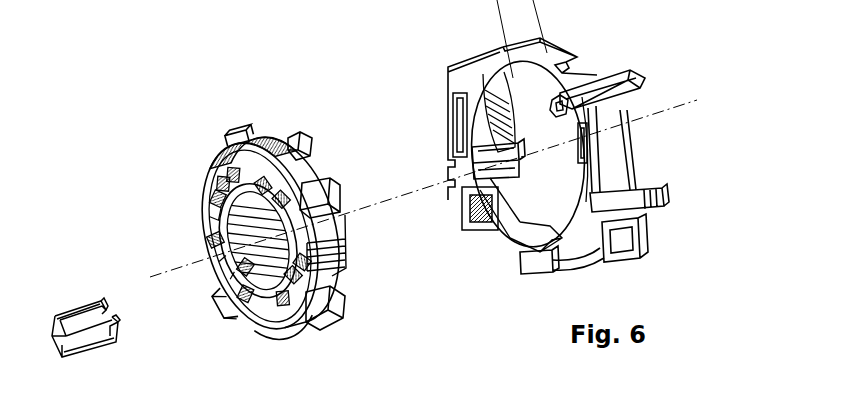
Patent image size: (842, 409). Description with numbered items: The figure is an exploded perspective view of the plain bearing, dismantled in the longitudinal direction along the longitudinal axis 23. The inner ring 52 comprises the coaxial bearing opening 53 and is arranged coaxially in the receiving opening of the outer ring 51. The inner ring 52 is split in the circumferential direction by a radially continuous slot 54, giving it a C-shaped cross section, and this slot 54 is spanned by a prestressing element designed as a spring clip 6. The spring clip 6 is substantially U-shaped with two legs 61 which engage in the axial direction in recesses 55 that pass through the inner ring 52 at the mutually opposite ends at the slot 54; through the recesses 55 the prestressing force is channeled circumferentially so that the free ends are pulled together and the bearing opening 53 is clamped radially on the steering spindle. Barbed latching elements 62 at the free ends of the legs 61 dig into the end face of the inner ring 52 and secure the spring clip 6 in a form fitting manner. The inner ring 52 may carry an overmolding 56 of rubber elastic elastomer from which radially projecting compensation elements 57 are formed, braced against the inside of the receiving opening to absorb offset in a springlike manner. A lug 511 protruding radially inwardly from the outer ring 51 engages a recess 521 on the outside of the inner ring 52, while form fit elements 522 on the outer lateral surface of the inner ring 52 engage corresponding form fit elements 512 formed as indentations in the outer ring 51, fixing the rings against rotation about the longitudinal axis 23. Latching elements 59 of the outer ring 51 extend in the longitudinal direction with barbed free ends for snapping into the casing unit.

The longitudinal axis 23 is at (670, 110).
The outer ring 51 is at (558, 204).
The lug 511 is at (558, 98).
The form fit elements 512 is at (458, 192).
The inner ring 52 is at (269, 140).
The recess 521 is at (308, 185).
The form fit elements 522 is at (236, 130).
The bearing opening 53 is at (258, 243).
The slot 54 is at (230, 288).
The recesses 55 is at (238, 267).
The overmolding 56 is at (279, 331).
The compensation elements 57 is at (267, 328).
The latching elements 59 is at (617, 80).
The spring clip 6 is at (76, 372).
The legs 61 is at (80, 314).
The barbed latching elements 62 is at (105, 308).